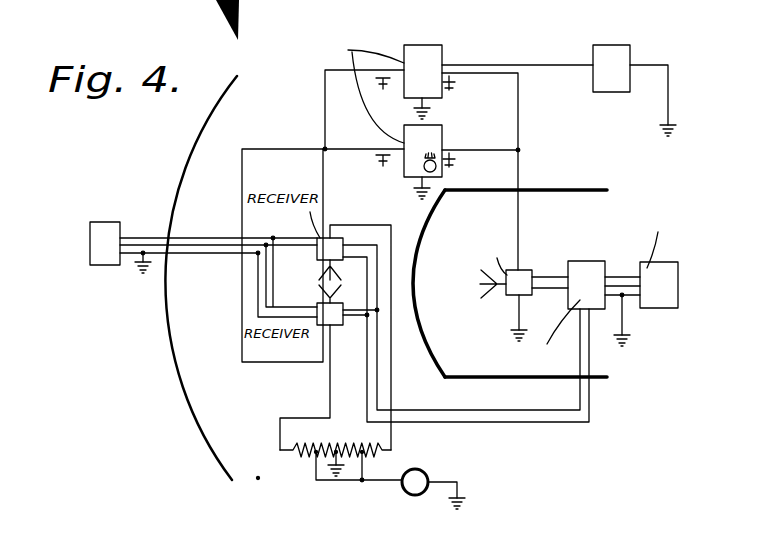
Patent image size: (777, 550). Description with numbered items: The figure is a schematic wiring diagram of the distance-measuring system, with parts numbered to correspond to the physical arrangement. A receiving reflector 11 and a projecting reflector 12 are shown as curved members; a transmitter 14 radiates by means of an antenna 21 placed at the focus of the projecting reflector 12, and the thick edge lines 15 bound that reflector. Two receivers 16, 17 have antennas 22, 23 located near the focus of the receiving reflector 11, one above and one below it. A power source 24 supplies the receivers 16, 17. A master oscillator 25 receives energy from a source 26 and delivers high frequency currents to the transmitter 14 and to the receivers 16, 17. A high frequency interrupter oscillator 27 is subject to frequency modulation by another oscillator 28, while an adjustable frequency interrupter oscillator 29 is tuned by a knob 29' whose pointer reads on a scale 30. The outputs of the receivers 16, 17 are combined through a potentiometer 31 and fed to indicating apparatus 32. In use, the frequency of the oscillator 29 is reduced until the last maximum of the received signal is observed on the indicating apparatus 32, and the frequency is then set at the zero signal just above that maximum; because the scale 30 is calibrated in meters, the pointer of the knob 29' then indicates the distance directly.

The receiving reflector 11 is at (192, 152).
The projecting reflector 12 is at (425, 221).
The transmitter 14 is at (527, 275).
The reflector edge shield 15 is at (580, 189).
The receiver 16 is at (318, 240).
The receiver 17 is at (327, 320).
The antenna 21 is at (490, 288).
The antenna 22 is at (318, 269).
The antenna 23 is at (321, 290).
The power source 24 is at (105, 221).
The master oscillator 25 is at (588, 262).
The source 26 is at (667, 268).
The high frequency interrupter oscillator 27 is at (443, 100).
The oscillator 28 is at (616, 90).
The adjustable frequency interrupter oscillator 29 is at (421, 125).
The knob 29' is at (481, 167).
The scale 30 is at (418, 160).
The potentiometer 31 is at (307, 460).
The indicating apparatus 32 is at (428, 474).